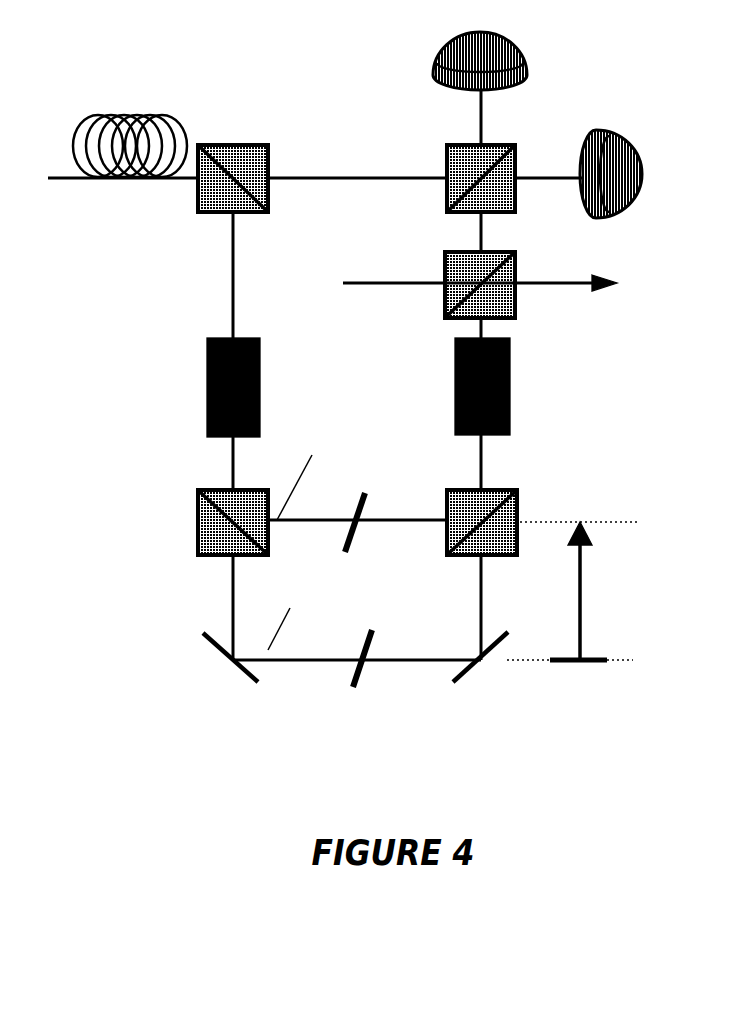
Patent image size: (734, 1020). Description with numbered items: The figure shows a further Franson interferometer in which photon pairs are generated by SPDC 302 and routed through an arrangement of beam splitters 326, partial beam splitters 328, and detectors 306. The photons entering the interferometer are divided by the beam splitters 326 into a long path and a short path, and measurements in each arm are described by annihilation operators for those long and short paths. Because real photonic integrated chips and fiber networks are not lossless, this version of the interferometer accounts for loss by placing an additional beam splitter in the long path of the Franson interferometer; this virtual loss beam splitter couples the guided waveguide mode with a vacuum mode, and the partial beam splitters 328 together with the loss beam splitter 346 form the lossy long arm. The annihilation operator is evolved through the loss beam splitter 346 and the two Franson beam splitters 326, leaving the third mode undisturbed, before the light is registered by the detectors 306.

The SPDC 302 is at (178, 31).
The beam splitters BS 326 is at (463, 143).
The detectors 306 is at (507, 41).
The beam splitter BSL 346 is at (517, 292).
The partial beam splitters PBS 328 is at (518, 508).